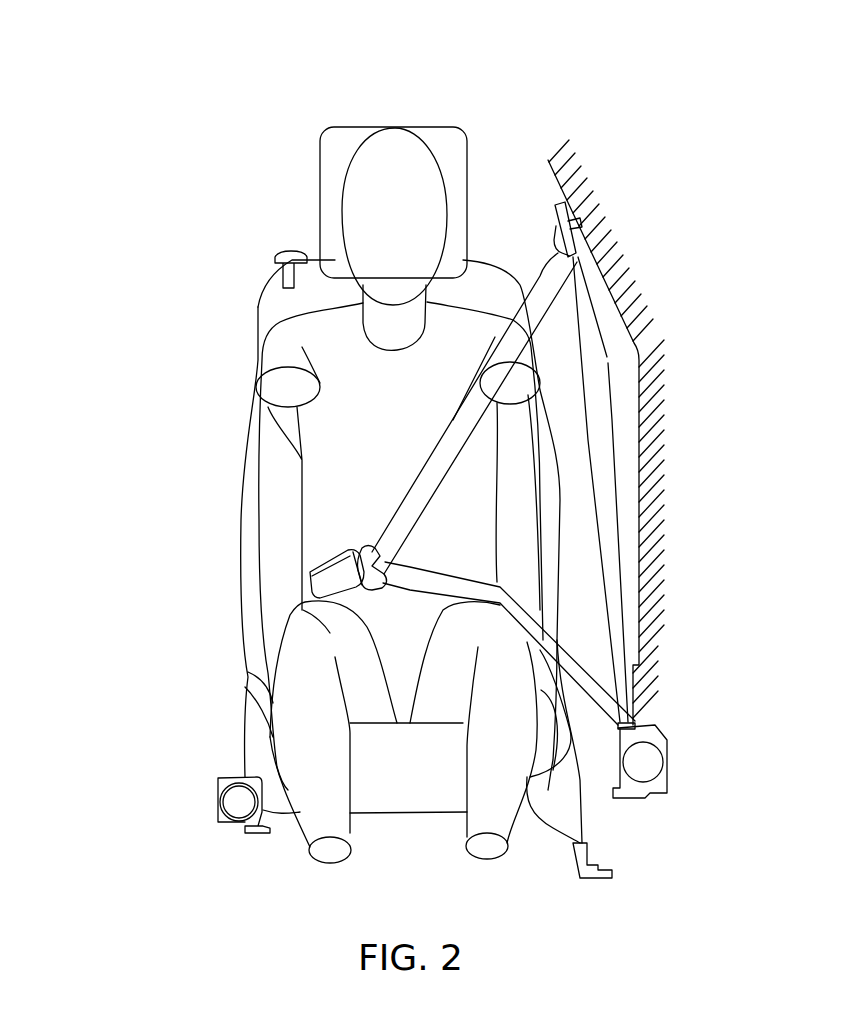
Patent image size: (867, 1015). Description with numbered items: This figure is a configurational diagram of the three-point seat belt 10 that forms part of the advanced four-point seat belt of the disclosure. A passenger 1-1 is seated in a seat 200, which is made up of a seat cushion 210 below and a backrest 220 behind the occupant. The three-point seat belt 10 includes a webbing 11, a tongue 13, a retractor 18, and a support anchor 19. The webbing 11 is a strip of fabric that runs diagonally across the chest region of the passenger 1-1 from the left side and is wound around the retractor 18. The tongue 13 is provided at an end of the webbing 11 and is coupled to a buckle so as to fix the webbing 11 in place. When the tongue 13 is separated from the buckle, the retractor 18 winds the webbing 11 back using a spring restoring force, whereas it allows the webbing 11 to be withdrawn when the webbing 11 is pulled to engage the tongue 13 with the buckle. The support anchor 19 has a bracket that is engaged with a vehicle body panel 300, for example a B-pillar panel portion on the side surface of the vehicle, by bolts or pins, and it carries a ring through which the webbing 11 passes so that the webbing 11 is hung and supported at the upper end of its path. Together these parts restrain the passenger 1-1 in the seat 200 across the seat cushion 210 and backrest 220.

The passenger 1-1 is at (390, 150).
The three-point seat belt 10 is at (328, 502).
The webbing 11 is at (437, 467).
The tongue 13 is at (337, 565).
The retractor 18 is at (652, 766).
The support anchor 19 is at (581, 226).
The seat 200 is at (328, 502).
The seat cushion 210 is at (262, 740).
The backrest 220 is at (252, 618).
The vehicle body panel 300 is at (640, 421).